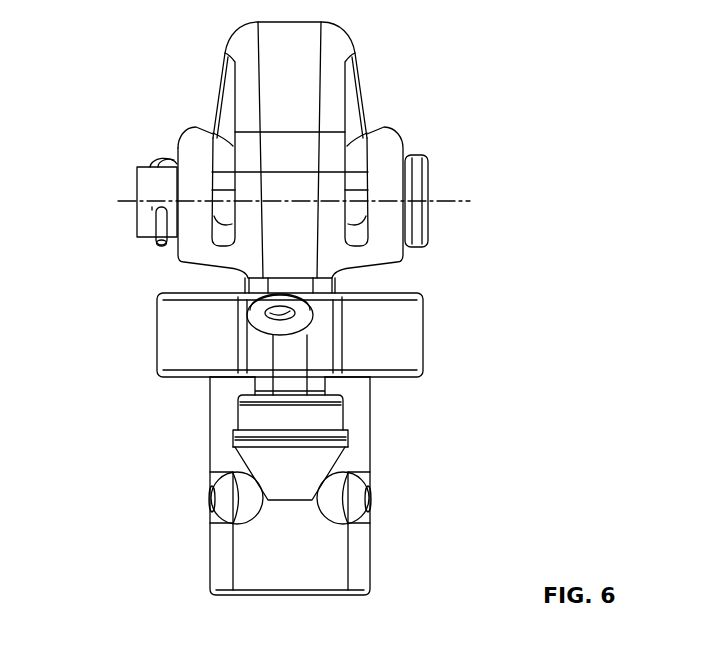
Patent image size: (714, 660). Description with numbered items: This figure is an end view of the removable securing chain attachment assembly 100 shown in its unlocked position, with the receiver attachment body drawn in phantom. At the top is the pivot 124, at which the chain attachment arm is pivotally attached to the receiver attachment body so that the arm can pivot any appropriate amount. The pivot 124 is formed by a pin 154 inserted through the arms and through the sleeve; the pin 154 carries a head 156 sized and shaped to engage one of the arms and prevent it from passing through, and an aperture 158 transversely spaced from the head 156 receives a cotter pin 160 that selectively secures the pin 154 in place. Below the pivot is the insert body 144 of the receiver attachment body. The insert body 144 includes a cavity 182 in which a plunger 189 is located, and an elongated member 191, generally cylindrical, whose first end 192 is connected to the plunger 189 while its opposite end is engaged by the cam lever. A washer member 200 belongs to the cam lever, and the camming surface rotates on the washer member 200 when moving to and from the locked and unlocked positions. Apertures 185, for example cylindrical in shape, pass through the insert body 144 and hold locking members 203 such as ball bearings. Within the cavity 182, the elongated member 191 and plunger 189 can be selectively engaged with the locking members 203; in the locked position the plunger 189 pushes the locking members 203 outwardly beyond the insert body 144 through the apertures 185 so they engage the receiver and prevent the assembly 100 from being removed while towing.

The removable securing chain attachment assembly 100 is at (148, 45).
The pivot 124 is at (472, 201).
The insert body 144 is at (217, 423).
The pin 154 is at (143, 179).
The head 156 is at (417, 168).
The aperture 158 is at (152, 210).
The cotter pin 160 is at (157, 244).
The cavity 182 is at (347, 438).
The apertures 185 is at (210, 522).
The plunger 189 is at (292, 488).
The elongated member 191 is at (295, 350).
The first end 192 is at (297, 389).
The washer member 200 is at (313, 316).
The locking members 203 is at (227, 495).